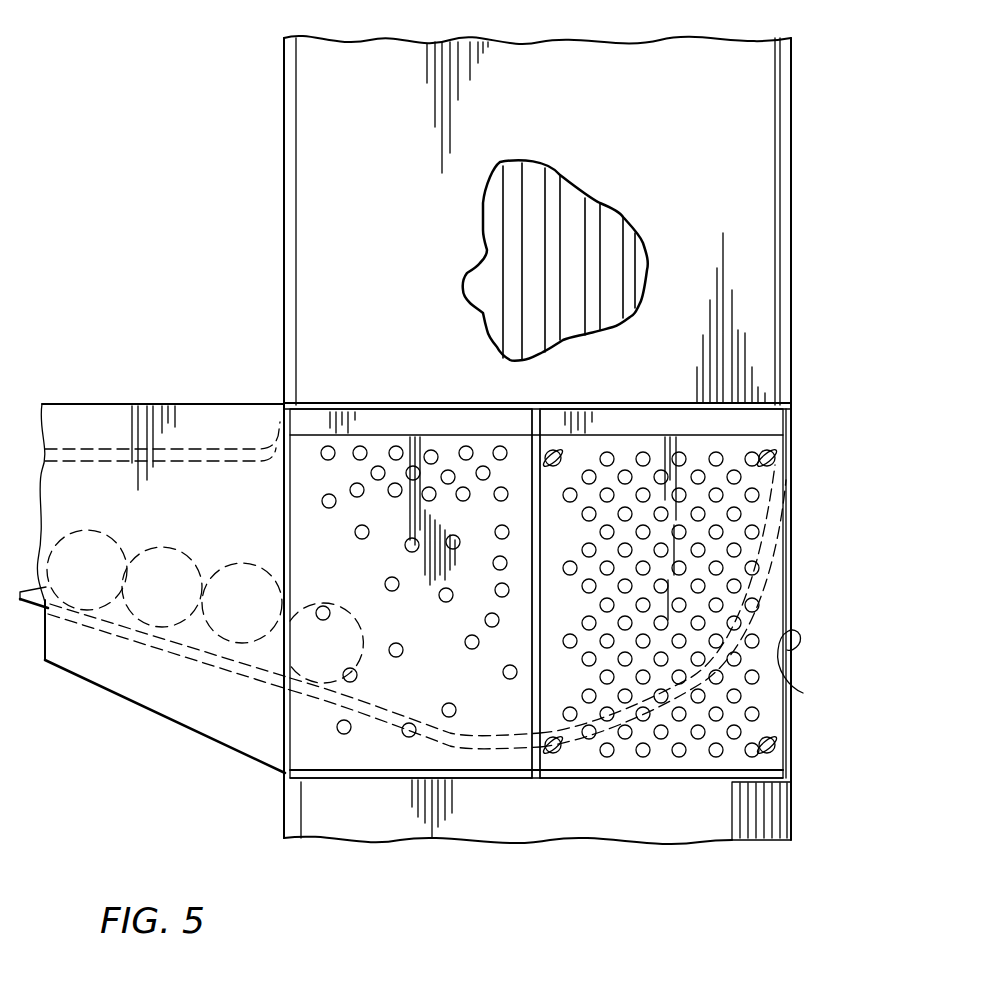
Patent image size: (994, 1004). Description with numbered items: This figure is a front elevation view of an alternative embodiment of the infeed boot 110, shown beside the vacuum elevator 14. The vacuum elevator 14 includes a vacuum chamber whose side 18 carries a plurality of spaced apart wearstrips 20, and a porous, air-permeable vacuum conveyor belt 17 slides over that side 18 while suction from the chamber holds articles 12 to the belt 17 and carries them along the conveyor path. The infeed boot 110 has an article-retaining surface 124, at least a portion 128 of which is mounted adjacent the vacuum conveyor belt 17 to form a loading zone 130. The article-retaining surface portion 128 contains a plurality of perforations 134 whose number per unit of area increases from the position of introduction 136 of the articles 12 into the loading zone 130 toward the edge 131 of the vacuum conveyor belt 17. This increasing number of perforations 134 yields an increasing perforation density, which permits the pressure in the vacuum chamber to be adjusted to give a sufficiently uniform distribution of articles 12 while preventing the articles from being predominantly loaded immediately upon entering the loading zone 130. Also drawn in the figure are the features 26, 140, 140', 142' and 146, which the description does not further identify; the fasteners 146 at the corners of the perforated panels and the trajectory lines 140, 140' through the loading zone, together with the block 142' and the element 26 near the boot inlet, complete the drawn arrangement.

The vacuum elevator 14 is at (788, 292).
The vacuum conveyor belt 17 is at (393, 203).
The side of vacuum chamber 18 is at (553, 235).
The wearstrips 20 is at (553, 235).
The article-retaining surface 124 is at (252, 512).
The articles 12 is at (122, 552).
The conveyor flange 26 is at (22, 604).
The position of introduction 136 is at (279, 688).
The infeed boot 110 is at (260, 773).
The article-retaining surface portion 128 is at (455, 687).
The perforations 134 is at (427, 500).
The trajectory line 140 is at (415, 788).
The fasteners 146 is at (555, 760).
The trajectory line in second panel 140' is at (663, 681).
The hatched support block 142' is at (754, 827).
The loading zone 130 is at (800, 579).
The edge of vacuum conveyor belt 131 is at (811, 671).